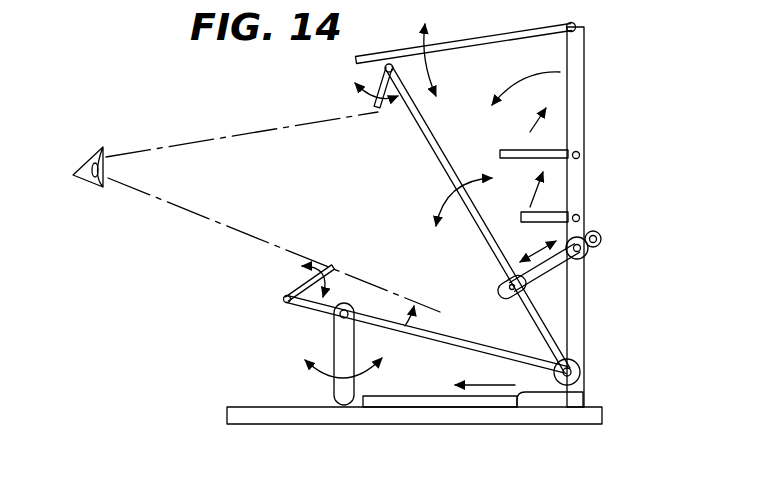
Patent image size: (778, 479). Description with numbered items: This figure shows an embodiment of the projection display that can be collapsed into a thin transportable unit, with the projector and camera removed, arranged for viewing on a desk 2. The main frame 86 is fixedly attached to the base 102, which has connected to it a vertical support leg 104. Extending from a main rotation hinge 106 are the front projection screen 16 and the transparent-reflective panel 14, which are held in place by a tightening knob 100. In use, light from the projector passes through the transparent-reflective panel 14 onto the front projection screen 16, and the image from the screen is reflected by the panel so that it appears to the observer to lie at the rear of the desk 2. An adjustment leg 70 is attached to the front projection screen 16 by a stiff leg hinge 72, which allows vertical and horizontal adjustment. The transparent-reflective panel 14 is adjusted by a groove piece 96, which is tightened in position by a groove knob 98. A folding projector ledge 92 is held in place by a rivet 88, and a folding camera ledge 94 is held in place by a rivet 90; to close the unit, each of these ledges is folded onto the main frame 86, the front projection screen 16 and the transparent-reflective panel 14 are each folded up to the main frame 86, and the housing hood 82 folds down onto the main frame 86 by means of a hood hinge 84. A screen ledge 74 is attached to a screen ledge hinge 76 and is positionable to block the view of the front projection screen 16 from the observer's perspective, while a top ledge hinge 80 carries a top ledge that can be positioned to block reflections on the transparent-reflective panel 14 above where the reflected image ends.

The desk 2 is at (590, 424).
The transparent-reflective panel 14 is at (446, 172).
The front projection screen 16 is at (478, 346).
The adjustment leg 70 is at (386, 108).
The stiff leg hinge 72 is at (336, 314).
The screen ledge 74 is at (301, 285).
The screen ledge hinge 76 is at (284, 301).
The top ledge hinge 80 is at (398, 54).
The housing hood 82 is at (505, 44).
The hood hinge 84 is at (576, 28).
The main frame 86 is at (586, 89).
The rivet 88 is at (582, 155).
The rivet 90 is at (585, 217).
The folding projector ledge 92 is at (500, 150).
The folding camera ledge 94 is at (546, 212).
The groove piece 96 is at (600, 240).
The groove knob 98 is at (586, 258).
The tightening knob 100 is at (582, 370).
The base 102 is at (584, 395).
The vertical support leg 104 is at (428, 396).
The main rotation hinge 106 is at (578, 352).